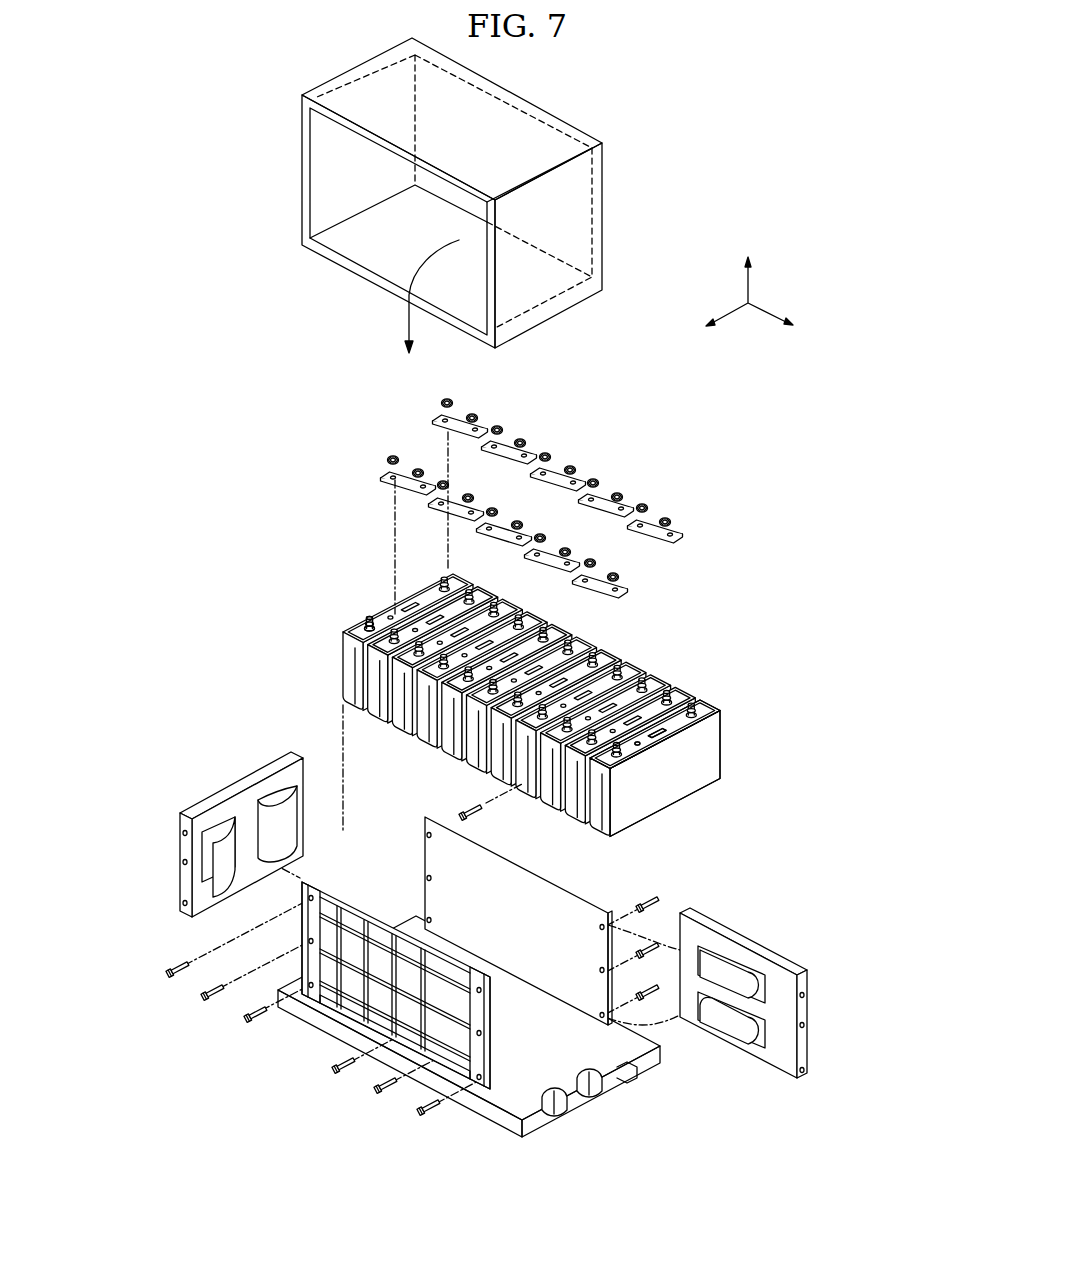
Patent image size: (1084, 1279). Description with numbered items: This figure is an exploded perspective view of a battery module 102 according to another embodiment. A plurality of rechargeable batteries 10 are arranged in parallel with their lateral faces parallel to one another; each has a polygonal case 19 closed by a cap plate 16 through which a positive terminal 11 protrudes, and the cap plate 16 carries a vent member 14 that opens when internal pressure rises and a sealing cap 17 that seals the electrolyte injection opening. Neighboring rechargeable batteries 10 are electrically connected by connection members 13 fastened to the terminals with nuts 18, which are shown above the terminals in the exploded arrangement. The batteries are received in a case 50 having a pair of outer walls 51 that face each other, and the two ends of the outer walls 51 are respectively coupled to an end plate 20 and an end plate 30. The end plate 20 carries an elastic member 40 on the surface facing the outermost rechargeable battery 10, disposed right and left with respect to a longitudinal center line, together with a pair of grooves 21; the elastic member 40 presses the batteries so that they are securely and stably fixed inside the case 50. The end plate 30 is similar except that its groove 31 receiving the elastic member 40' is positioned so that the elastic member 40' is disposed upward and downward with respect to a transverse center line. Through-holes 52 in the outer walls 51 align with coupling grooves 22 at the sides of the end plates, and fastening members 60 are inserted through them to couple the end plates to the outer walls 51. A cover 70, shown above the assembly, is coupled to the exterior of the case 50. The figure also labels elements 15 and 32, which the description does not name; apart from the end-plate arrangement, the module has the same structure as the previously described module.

The battery module 102 is at (683, 133).
The cover 70 is at (298, 190).
The rechargeable battery 10 is at (542, 703).
The positive terminal 11 is at (343, 630).
The connection member 13 is at (554, 469).
The vent member 14 is at (656, 738).
The cap plate 15 is at (706, 707).
The cap plate 16 is at (639, 747).
The sealing cap 17 is at (373, 613).
The nut 18 is at (500, 428).
The case 19 is at (706, 773).
The end plate 20 is at (212, 821).
The grooves 21 is at (200, 868).
The coupling groove 22 is at (182, 833).
The end plate 30 is at (771, 987).
The groove 31 is at (762, 1036).
The fastening hole 32 is at (806, 995).
The elastic member 40 is at (209, 859).
The elastic member 40' is at (722, 1025).
The case 50 is at (294, 1032).
The outer walls 51 is at (456, 987).
The through-hole 52 is at (480, 1080).
The fastening member 60 is at (248, 1017).